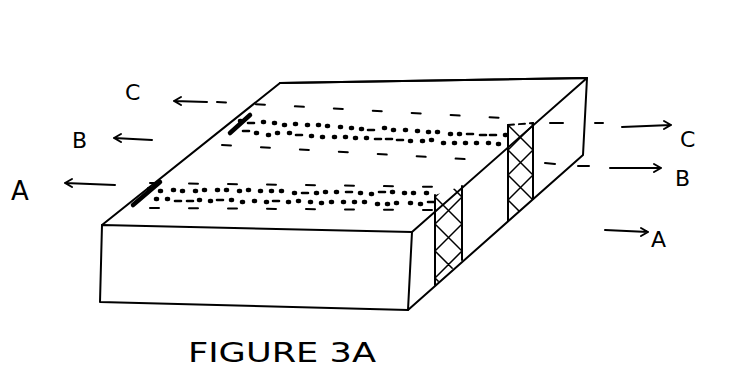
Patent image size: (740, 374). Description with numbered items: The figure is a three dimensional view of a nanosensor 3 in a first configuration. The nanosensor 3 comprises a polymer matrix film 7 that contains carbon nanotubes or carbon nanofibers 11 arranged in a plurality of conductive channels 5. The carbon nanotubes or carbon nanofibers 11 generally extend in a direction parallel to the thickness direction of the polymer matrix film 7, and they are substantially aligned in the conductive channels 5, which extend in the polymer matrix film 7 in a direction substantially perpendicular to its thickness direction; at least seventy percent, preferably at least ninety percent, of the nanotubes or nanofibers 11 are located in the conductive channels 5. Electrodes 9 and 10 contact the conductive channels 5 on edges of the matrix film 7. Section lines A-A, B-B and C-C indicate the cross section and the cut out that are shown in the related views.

The nanosensor 3 is at (437, 40).
The conductive channels 5 is at (253, 120).
The polymer matrix film 7 is at (505, 84).
The electrode 9 is at (517, 200).
The electrode 10 is at (236, 126).
The carbon nanotubes or carbon nanofibers 11 is at (302, 192).